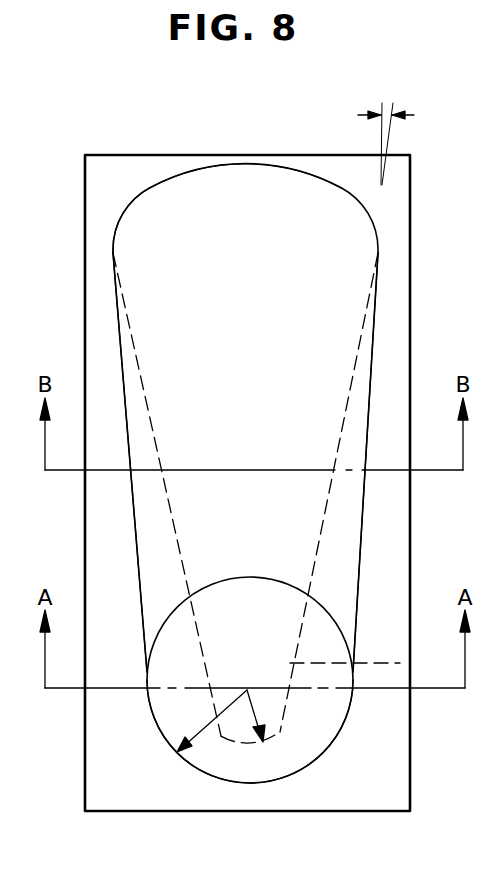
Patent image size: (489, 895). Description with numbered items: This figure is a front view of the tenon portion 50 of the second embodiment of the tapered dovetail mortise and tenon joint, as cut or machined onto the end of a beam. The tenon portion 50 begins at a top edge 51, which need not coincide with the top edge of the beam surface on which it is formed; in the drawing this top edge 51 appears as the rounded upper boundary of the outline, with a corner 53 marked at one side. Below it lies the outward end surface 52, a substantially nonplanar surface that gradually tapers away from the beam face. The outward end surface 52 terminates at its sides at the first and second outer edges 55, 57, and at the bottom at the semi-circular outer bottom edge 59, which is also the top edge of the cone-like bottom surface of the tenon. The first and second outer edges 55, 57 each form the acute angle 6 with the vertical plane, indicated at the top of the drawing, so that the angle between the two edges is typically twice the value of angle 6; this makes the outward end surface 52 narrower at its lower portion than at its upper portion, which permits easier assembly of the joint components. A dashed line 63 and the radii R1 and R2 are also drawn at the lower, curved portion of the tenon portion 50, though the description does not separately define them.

The tenon portion 50 is at (425, 290).
The top edge 51 is at (253, 167).
The outward end surface 52 is at (262, 451).
The corner 53 is at (115, 253).
The first outer edge 55 is at (134, 538).
The second outer edge 57 is at (360, 570).
The outer bottom edge 59 is at (200, 772).
The center line 63 is at (400, 663).
The acute angle 6 is at (360, 115).
The inner radius R1 is at (258, 714).
The outer radius R2 is at (210, 723).